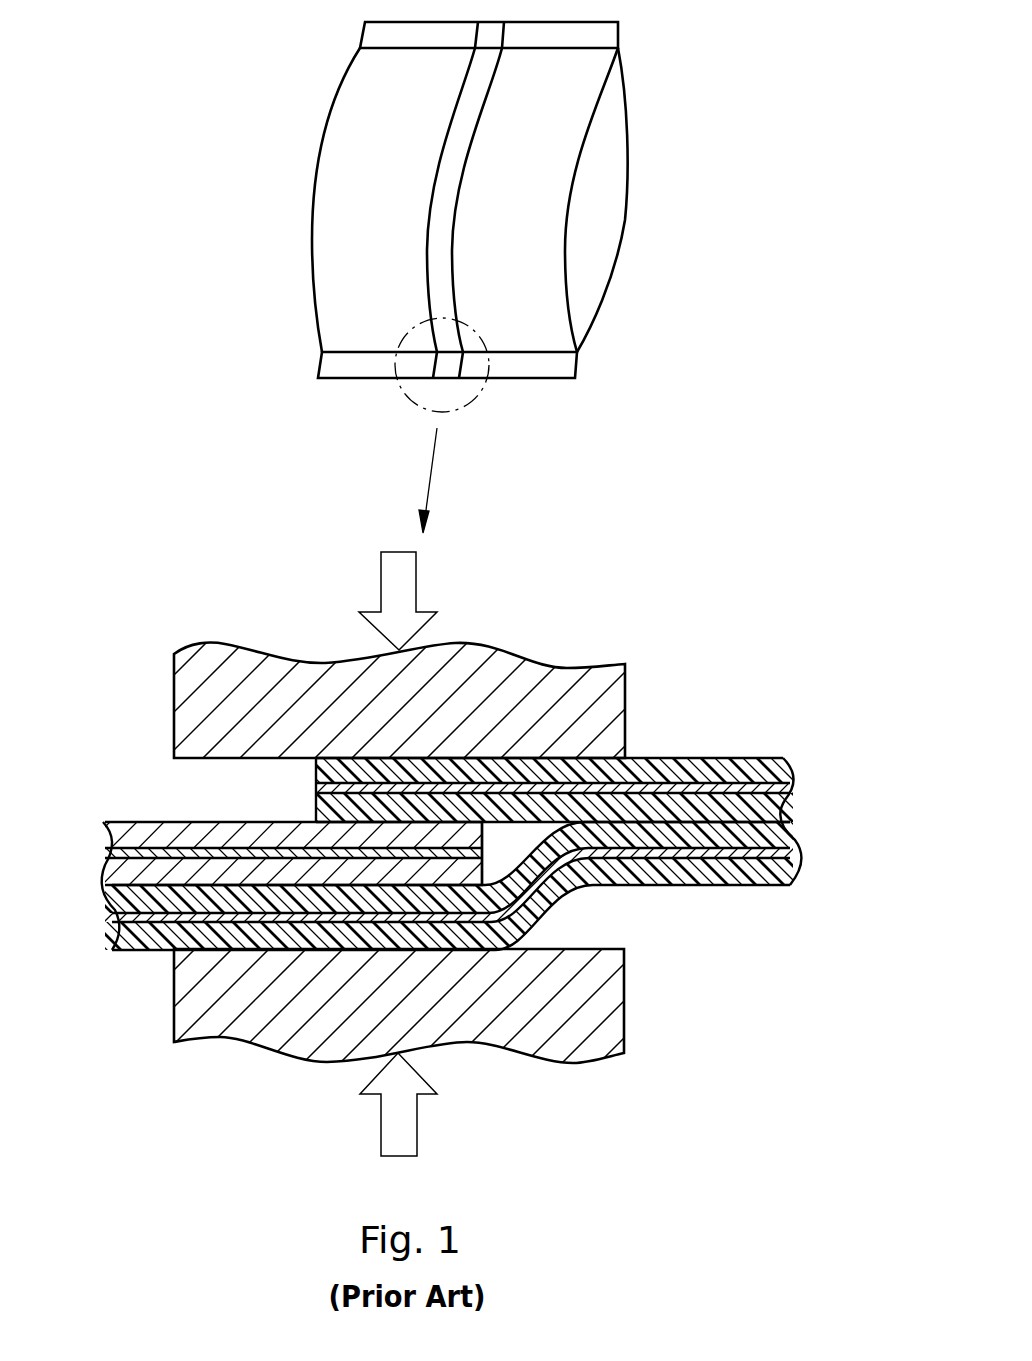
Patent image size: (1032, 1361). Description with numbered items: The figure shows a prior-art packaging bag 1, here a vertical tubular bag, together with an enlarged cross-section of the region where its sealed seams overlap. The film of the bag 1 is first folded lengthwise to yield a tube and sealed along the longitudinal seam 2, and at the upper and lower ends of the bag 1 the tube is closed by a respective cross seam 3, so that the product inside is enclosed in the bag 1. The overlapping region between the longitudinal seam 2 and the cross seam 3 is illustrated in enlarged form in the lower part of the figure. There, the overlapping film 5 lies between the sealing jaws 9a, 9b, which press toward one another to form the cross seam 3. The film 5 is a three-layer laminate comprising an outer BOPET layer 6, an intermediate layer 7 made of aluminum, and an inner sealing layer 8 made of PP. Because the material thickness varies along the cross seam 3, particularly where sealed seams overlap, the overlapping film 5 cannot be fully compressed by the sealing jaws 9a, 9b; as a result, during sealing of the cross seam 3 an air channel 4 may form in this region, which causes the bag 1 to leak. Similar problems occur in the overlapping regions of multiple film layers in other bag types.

The bag 1 is at (508, 189).
The longitudinal seam 2 is at (458, 123).
The cross seam 3 is at (593, 33).
The air channel 4 is at (500, 837).
The film 5 is at (357, 210).
The outer BOPET layer 6 is at (725, 773).
The intermediate layer 7 is at (653, 792).
The inner sealing layer 8 is at (733, 811).
The sealing jaw 9a is at (212, 990).
The sealing jaw 9b is at (223, 725).